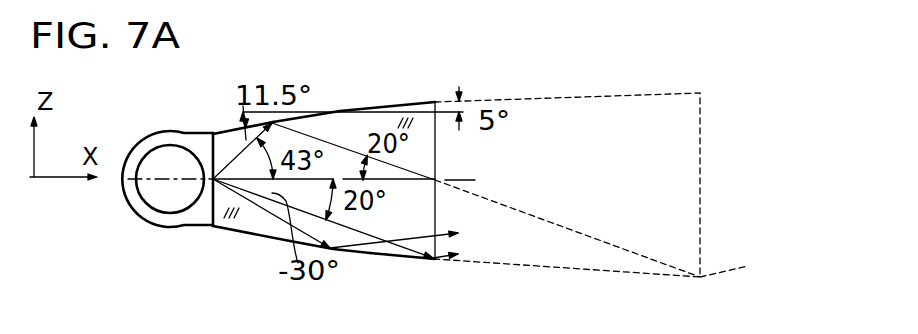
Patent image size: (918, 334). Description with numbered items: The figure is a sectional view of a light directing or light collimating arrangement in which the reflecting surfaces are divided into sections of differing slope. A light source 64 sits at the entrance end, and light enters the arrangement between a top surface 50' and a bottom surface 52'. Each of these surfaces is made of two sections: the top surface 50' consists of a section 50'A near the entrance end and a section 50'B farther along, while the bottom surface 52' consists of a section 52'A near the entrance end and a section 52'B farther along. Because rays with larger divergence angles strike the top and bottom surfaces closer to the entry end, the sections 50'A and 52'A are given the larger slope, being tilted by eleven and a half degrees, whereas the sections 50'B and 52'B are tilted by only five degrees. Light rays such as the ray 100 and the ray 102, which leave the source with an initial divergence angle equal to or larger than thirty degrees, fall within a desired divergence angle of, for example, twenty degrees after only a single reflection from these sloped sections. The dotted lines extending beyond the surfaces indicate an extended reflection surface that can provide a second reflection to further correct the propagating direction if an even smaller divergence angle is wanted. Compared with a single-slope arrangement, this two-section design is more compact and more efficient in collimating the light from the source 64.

The light source 64 is at (167, 190).
The light ray 100 is at (226, 133).
The light ray 102 is at (265, 237).
The section of top surface 50'A is at (237, 102).
The top surface 50' is at (309, 88).
The section of top surface 50'B is at (400, 83).
The section of bottom surface 52'A is at (248, 252).
The bottom surface 52' is at (330, 276).
The section of bottom surface 52'B is at (431, 288).